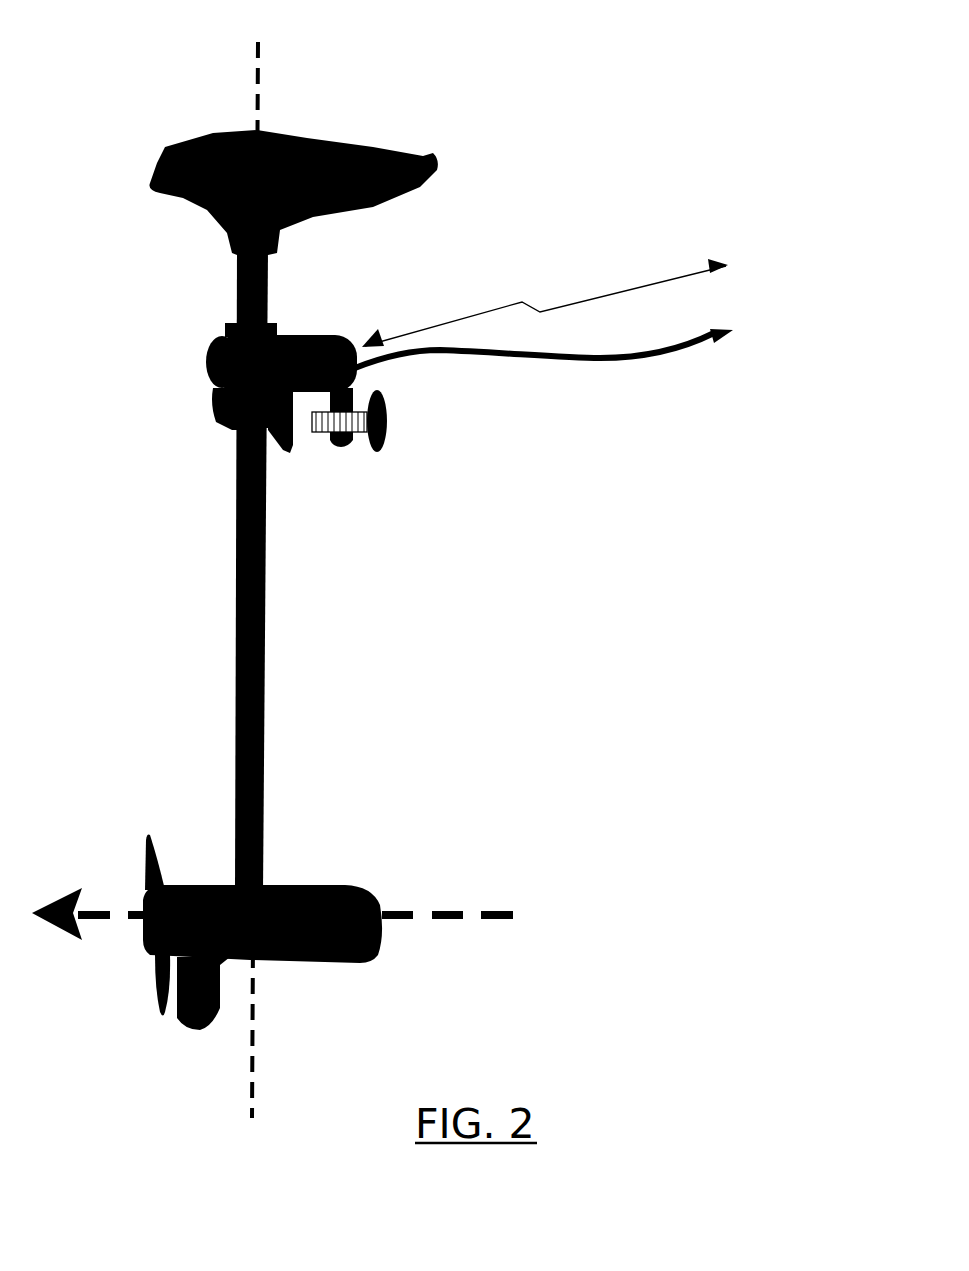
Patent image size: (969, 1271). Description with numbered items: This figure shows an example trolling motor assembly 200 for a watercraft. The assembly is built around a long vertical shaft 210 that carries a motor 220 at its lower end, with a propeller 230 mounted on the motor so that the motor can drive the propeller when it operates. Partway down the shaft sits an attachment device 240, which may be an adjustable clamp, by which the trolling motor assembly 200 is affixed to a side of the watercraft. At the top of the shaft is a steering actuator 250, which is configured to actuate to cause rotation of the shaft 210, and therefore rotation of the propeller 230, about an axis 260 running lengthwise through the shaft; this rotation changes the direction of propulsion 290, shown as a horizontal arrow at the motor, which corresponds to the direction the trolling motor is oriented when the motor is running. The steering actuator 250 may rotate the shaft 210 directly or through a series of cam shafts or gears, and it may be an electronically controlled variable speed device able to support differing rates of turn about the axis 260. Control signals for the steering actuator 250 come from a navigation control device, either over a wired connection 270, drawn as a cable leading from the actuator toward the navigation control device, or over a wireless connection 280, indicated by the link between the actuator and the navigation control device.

The trolling motor assembly 200 is at (356, 149).
The shaft 210 is at (327, 570).
The motor 220 is at (285, 895).
The propeller 230 is at (150, 956).
The attachment device 240 is at (314, 455).
The steering actuator 250 is at (387, 298).
The axis 260 is at (302, 571).
The wired connection 270 is at (544, 380).
The wireless connection 280 is at (620, 296).
The direction of propulsion 290 is at (272, 861).